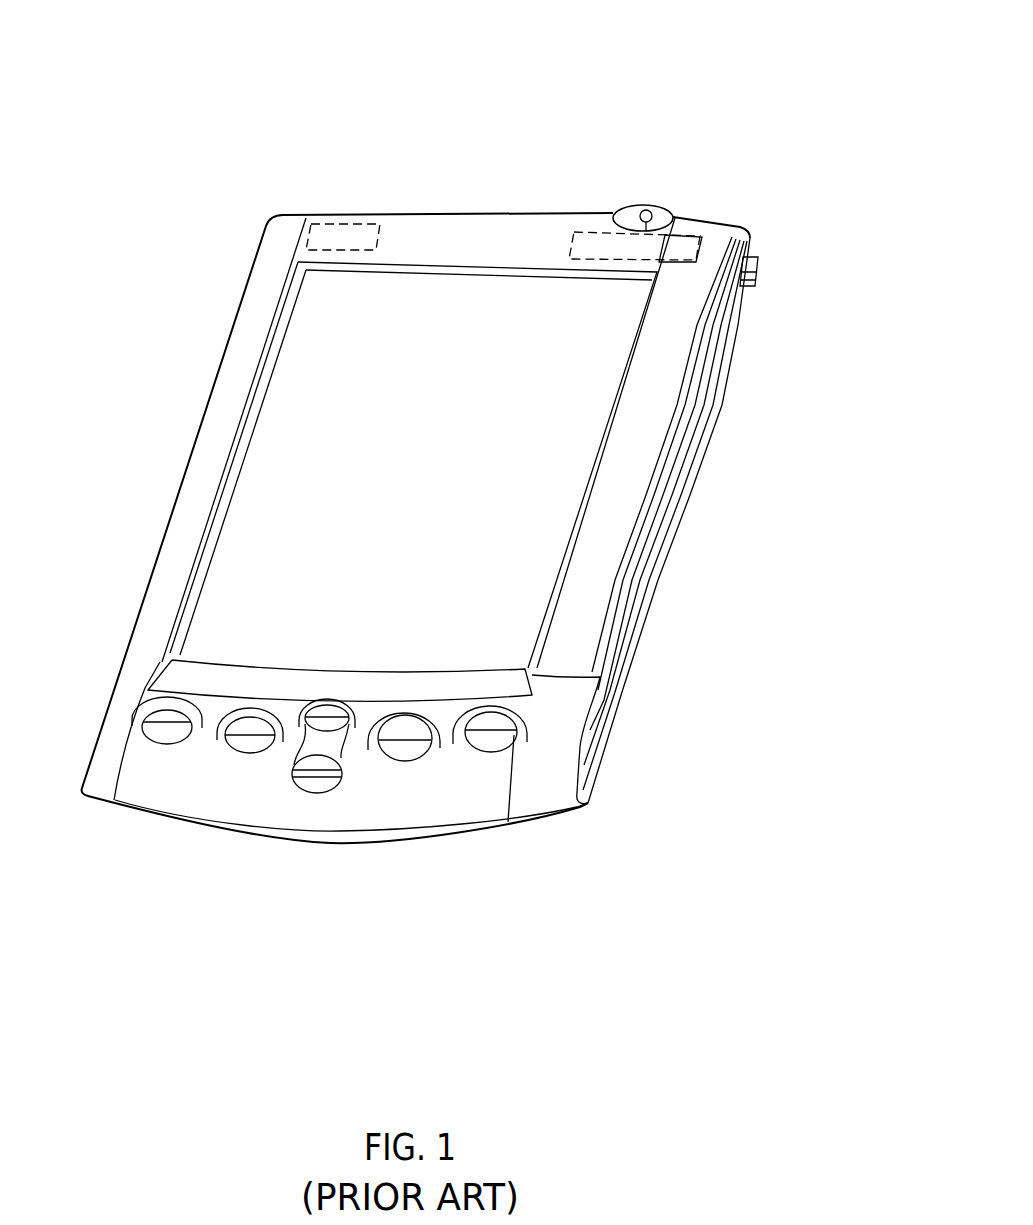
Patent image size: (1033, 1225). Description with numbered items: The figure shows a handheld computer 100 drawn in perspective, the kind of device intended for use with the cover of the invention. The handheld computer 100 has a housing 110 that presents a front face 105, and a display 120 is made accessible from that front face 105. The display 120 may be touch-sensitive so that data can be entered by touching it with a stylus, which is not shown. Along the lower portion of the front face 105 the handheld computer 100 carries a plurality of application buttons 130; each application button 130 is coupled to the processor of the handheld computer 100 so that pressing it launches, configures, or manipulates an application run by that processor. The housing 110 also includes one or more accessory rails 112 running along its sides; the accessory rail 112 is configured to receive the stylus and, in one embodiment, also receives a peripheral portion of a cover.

The handheld computer 100 is at (509, 175).
The front face 105 is at (670, 352).
The housing 110 is at (610, 527).
The accessory rail 112 is at (217, 375).
The display 120 is at (312, 412).
The application buttons 130 is at (160, 728).